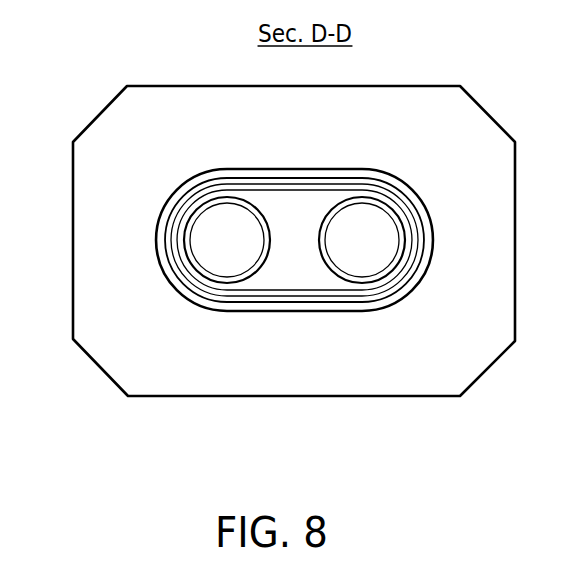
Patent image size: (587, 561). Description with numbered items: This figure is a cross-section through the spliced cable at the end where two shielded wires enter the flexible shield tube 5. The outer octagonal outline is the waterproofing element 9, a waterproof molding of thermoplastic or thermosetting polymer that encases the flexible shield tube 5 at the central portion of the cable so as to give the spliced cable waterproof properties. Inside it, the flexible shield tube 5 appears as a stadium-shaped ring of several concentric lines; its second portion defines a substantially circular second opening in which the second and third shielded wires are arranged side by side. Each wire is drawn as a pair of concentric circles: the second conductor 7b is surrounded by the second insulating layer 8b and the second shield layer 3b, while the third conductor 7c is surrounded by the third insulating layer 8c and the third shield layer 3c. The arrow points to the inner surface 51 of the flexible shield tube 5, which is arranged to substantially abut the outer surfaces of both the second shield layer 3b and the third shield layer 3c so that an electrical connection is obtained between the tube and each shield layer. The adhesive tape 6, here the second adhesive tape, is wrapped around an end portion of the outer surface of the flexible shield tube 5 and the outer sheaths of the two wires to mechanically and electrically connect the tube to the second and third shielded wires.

The waterproofing element 9 is at (100, 323).
The second insulating layer 8b is at (160, 237).
The third insulating layer 8c is at (425, 244).
The second conductor 7b is at (212, 232).
The third conductor 7c is at (372, 230).
The second shield layer 3b is at (223, 197).
The third shield layer 3c is at (373, 196).
The flexible shield tube 5 is at (243, 300).
The adhesive tape 6 is at (378, 311).
The inner surface 51 is at (272, 203).